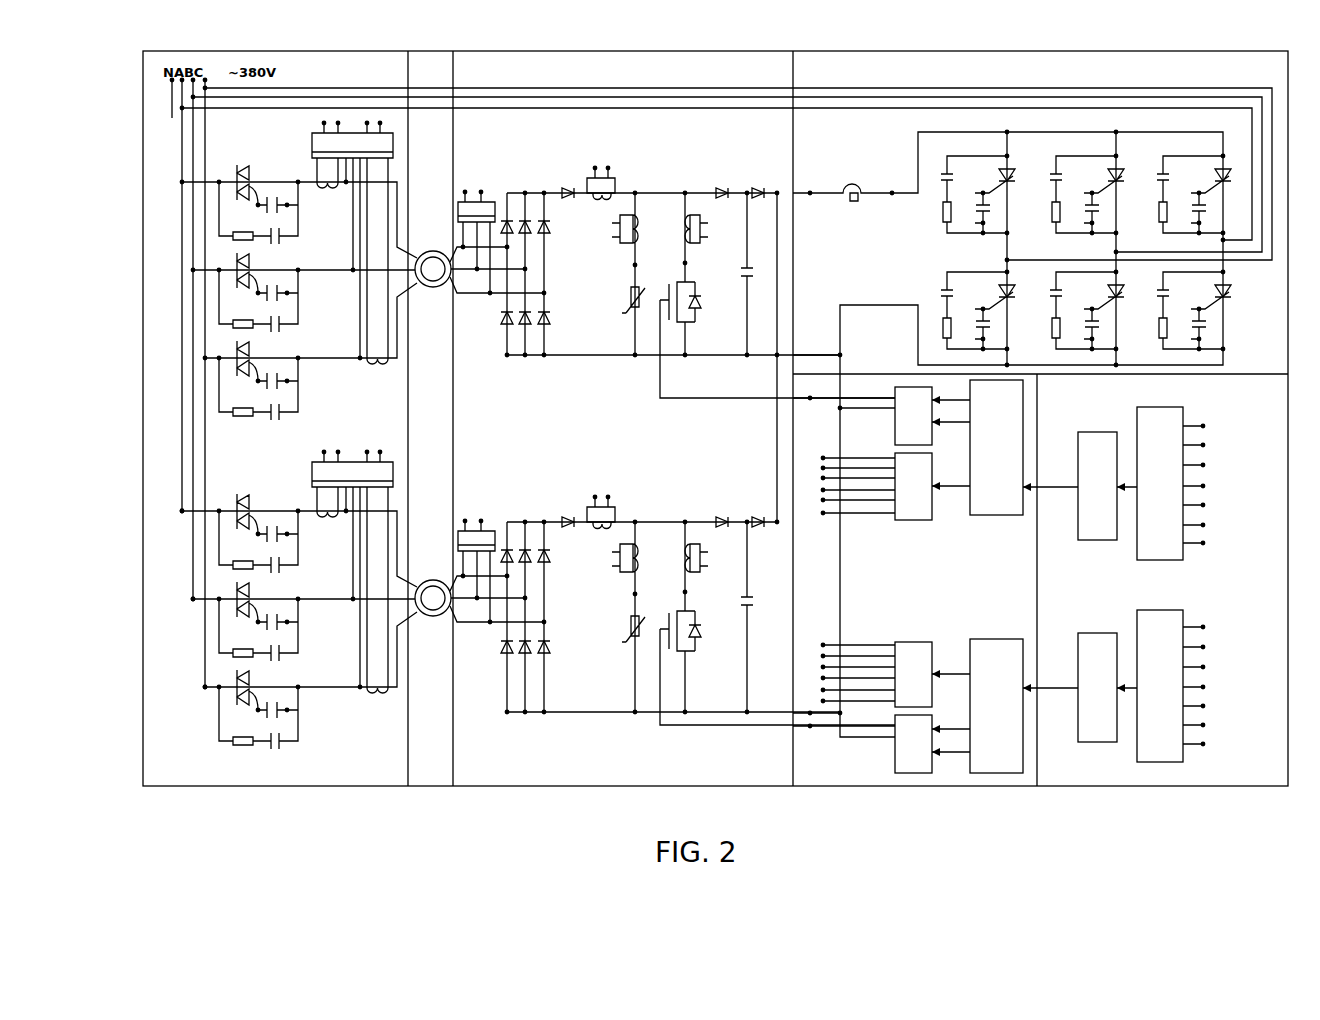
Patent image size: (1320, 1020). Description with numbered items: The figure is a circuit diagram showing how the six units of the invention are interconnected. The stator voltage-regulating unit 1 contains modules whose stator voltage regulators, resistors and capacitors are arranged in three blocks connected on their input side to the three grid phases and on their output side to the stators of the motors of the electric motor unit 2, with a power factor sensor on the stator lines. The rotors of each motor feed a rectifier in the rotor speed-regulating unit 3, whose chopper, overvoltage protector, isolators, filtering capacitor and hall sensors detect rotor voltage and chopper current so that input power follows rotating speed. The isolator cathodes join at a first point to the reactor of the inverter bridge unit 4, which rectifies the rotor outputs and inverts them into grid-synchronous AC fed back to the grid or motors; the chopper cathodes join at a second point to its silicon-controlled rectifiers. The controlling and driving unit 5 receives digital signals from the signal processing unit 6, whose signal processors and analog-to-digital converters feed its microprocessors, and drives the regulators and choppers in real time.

The stator voltage-regulating unit 1 is at (363, 447).
The electric motor unit 2 is at (430, 418).
The rotor speed-regulating unit 3 is at (676, 468).
The inverter bridge unit 4 is at (1030, 250).
The controlling and driving unit 5 is at (935, 570).
The signal processing unit 6 is at (1172, 596).